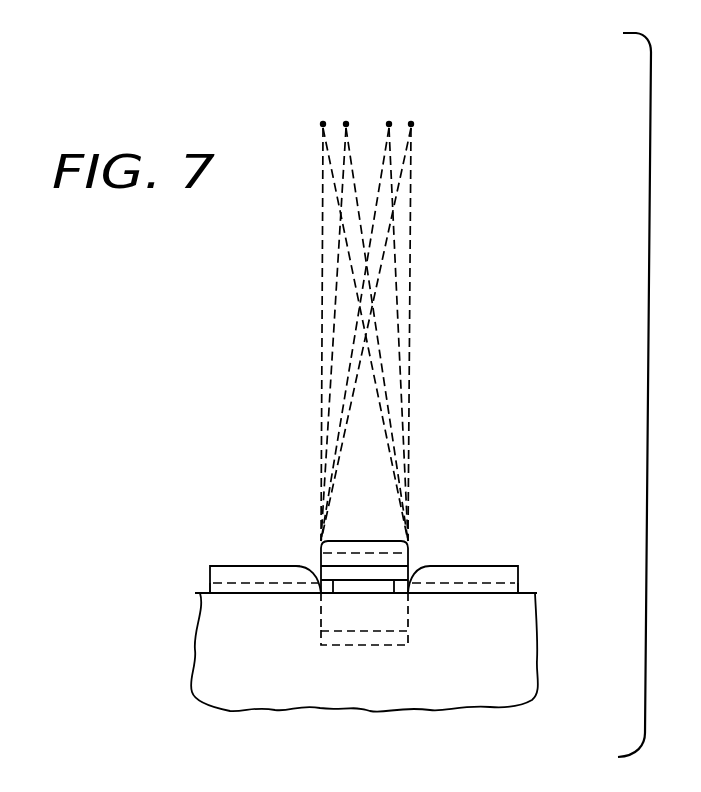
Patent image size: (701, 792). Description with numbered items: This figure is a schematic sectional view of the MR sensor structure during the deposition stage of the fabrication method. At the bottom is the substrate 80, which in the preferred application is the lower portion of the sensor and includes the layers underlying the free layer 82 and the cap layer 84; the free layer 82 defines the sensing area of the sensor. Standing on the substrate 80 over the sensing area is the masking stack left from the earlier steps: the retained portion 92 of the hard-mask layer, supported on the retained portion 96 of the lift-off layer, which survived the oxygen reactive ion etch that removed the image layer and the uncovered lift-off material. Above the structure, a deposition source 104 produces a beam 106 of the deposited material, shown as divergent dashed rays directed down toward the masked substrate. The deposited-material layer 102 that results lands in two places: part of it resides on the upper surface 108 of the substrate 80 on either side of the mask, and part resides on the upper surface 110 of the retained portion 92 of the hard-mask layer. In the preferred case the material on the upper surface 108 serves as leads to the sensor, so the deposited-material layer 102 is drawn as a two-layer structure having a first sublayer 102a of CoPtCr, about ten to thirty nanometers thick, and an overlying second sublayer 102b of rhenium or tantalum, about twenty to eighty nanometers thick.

The substrate 80 is at (206, 668).
The free layer 82 is at (398, 640).
The cap layer 84 is at (398, 607).
The retained portion of the hard-mask layer 92 is at (324, 578).
The retained portion of the lift-off layer 96 is at (368, 592).
The deposited-material layer 102 is at (242, 566).
The first sublayer 102a is at (218, 587).
The second sublayer 102b is at (263, 572).
The deposition source 104 is at (443, 102).
The beam 106 is at (322, 298).
The upper surface of the substrate 108 is at (512, 593).
The upper surface of the retained portion of the hard-mask layer 110 is at (397, 560).